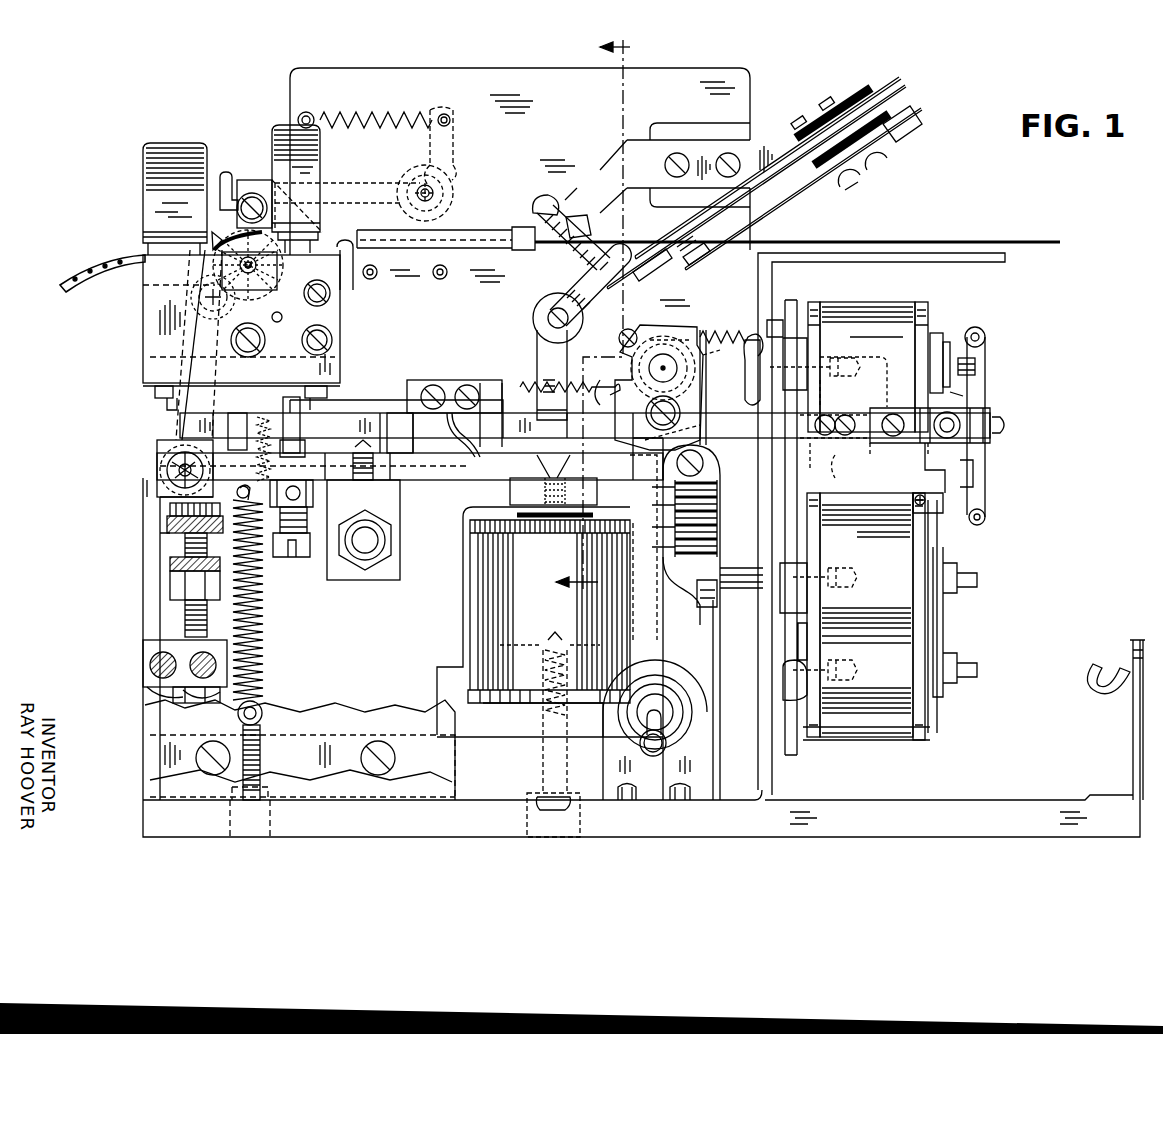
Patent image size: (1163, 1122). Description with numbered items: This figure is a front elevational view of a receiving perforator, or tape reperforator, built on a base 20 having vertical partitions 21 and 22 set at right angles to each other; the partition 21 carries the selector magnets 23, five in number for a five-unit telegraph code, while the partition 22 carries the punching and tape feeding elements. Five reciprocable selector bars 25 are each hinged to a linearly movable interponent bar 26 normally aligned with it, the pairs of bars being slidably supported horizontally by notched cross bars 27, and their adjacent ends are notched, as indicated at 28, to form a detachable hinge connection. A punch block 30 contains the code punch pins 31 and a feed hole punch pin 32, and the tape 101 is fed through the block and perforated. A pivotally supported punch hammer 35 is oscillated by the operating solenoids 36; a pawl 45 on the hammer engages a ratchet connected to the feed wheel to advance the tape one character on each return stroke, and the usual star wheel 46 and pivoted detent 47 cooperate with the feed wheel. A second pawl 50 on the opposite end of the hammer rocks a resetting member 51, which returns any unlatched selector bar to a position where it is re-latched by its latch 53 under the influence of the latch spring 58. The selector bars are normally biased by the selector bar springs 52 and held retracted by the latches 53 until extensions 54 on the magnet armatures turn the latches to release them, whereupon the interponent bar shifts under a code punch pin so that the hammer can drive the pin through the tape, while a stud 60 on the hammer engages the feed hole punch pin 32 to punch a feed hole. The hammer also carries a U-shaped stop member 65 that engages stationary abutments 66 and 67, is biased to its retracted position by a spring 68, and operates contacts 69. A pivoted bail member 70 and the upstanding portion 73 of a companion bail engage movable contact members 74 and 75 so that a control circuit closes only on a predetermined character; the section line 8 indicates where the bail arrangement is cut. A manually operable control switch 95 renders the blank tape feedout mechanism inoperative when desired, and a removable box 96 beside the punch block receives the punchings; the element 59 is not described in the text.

The section line 8- 8 is at (584, 314).
The base 20 is at (750, 832).
The vertical partition 21 is at (750, 762).
The vertical partition 22 is at (372, 72).
The selector magnets 23 is at (855, 302).
The selector bars 25 is at (720, 450).
The interponent bar 26 is at (346, 416).
The cross bars 27 is at (248, 416).
The notches 28 is at (476, 452).
The punch block 30 is at (148, 330).
The code punch pins 31 is at (160, 406).
The feed hole punch pin 32 is at (340, 398).
The punch hammer 35 is at (160, 470).
The operating solenoids 36 is at (478, 594).
The pawl 45 is at (180, 407).
The star wheel 46 is at (210, 240).
The pivoted detent 47 is at (332, 200).
The second pawl 50 is at (689, 375).
The resetting member 51 is at (692, 332).
The selector bar springs 52 is at (547, 380).
The latches 53 is at (916, 452).
The extensions 54 is at (913, 487).
The latch spring 58 is at (977, 330).
The spring 59 is at (712, 345).
The stud 60 is at (278, 555).
The U-shaped stop member 65 is at (158, 533).
The stationary abutment 66 is at (168, 520).
The stationary abutment 67 is at (168, 570).
The spring 68 is at (263, 598).
The contacts 69 is at (717, 525).
The bail member 70 is at (547, 347).
The upstanding portion 73 is at (580, 264).
The movable contact member 74 is at (908, 88).
The movable contact member 75 is at (784, 189).
The manually operable control switch 95 is at (665, 746).
The removable box 96 is at (428, 800).
The tape 101 is at (1058, 243).